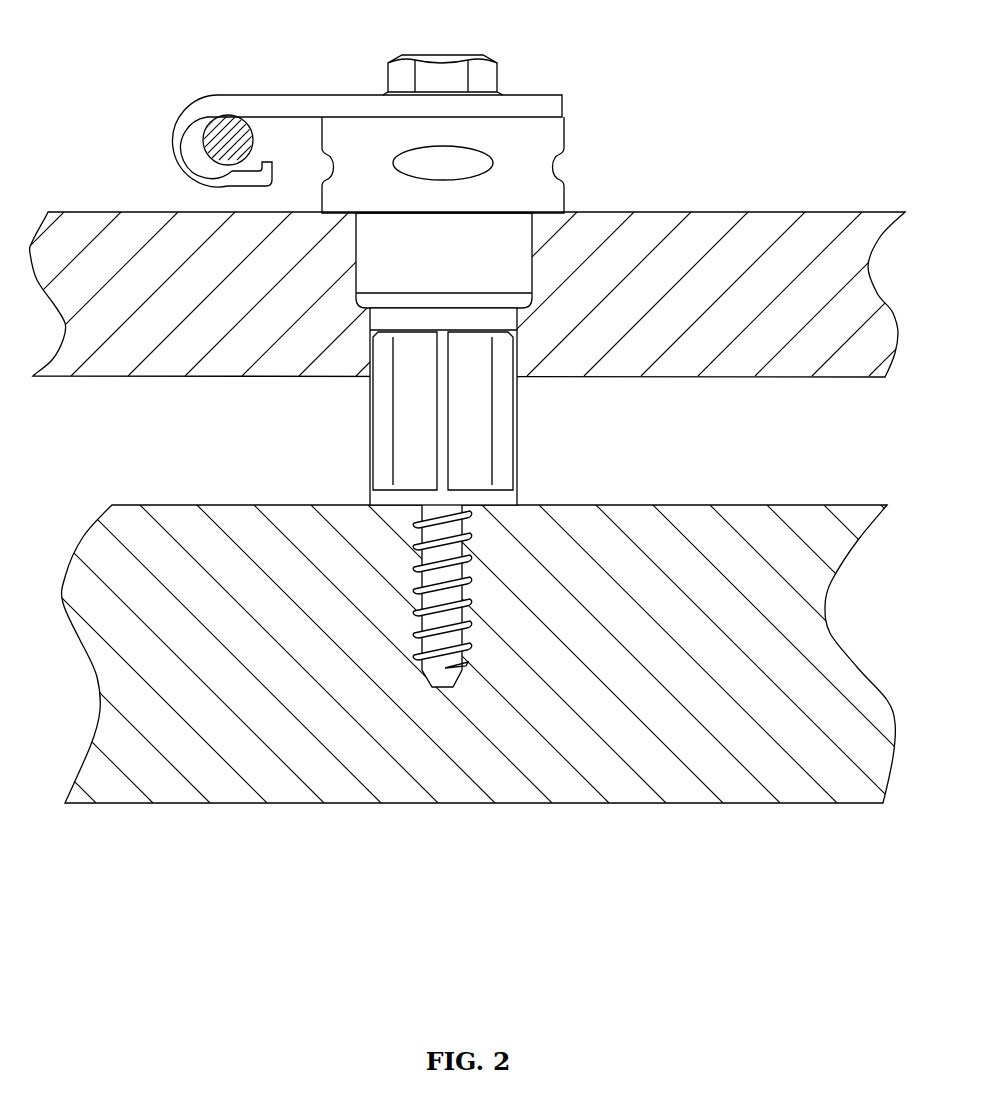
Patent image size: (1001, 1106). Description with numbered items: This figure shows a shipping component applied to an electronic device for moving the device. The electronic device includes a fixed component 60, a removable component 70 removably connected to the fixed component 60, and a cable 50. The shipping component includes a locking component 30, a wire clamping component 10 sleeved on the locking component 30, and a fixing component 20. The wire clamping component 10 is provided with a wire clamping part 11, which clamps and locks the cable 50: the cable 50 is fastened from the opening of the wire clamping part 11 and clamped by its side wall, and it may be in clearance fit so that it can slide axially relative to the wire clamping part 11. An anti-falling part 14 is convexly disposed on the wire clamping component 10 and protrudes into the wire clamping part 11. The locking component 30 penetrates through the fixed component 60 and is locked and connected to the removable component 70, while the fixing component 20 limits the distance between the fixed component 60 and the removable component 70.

The wire clamping component 10 is at (548, 104).
The wire clamping part 11 is at (257, 150).
The anti-falling part 14 is at (273, 163).
The fixing component 20 is at (516, 432).
The locking component 30 is at (473, 80).
The cable 50 is at (220, 96).
The fixed component 60 is at (94, 212).
The removable component 70 is at (712, 730).